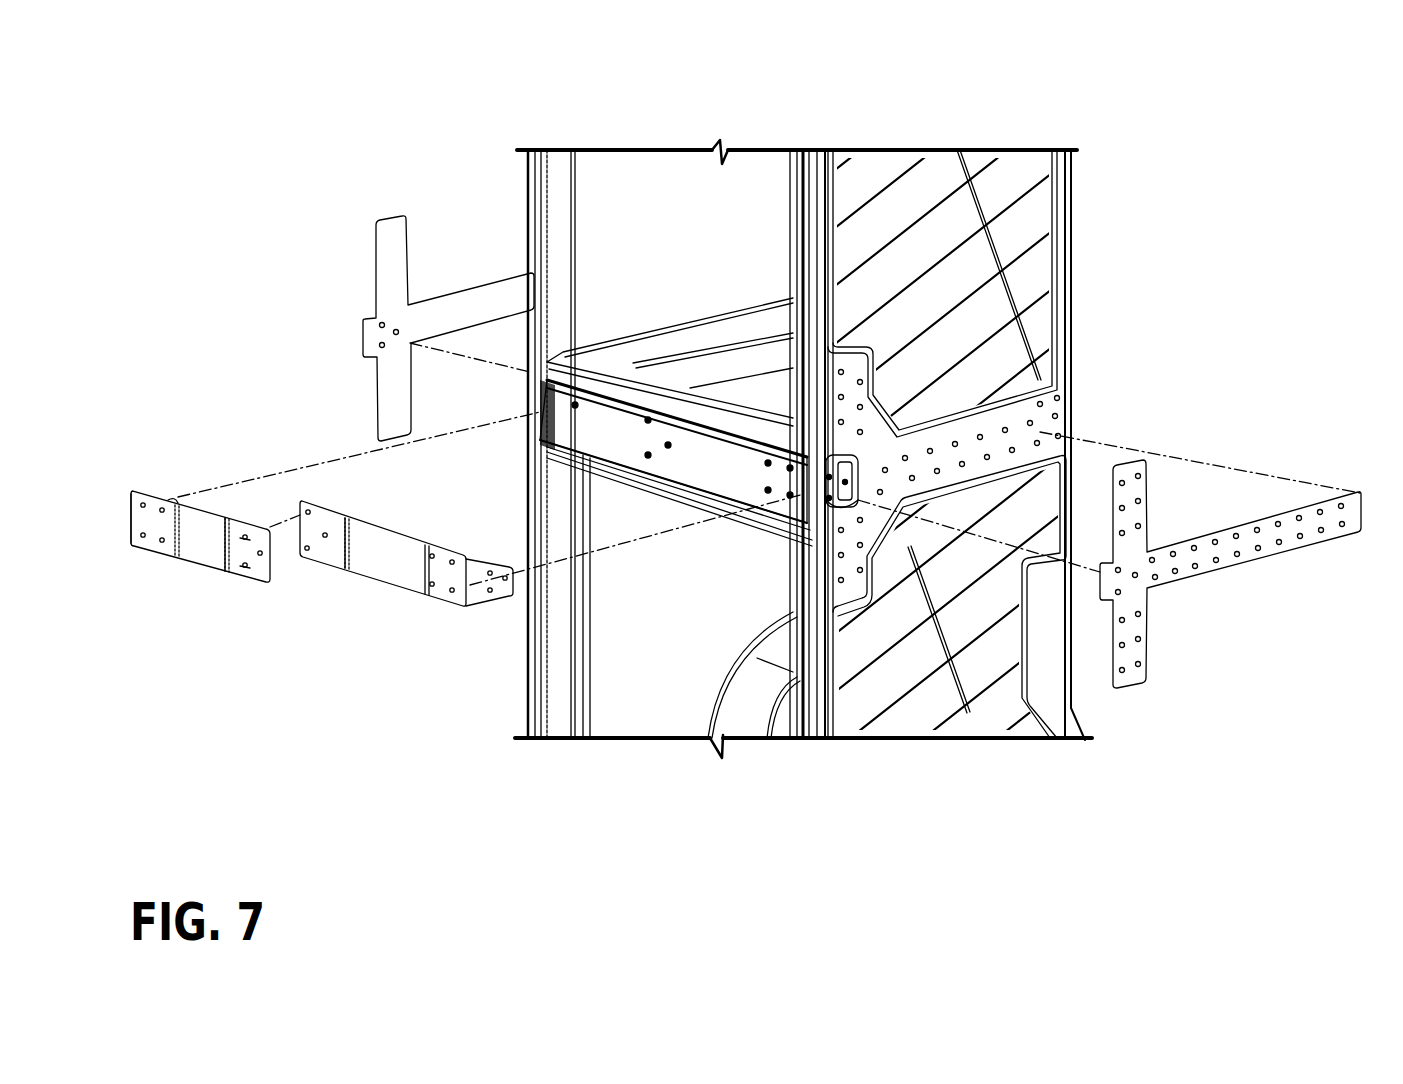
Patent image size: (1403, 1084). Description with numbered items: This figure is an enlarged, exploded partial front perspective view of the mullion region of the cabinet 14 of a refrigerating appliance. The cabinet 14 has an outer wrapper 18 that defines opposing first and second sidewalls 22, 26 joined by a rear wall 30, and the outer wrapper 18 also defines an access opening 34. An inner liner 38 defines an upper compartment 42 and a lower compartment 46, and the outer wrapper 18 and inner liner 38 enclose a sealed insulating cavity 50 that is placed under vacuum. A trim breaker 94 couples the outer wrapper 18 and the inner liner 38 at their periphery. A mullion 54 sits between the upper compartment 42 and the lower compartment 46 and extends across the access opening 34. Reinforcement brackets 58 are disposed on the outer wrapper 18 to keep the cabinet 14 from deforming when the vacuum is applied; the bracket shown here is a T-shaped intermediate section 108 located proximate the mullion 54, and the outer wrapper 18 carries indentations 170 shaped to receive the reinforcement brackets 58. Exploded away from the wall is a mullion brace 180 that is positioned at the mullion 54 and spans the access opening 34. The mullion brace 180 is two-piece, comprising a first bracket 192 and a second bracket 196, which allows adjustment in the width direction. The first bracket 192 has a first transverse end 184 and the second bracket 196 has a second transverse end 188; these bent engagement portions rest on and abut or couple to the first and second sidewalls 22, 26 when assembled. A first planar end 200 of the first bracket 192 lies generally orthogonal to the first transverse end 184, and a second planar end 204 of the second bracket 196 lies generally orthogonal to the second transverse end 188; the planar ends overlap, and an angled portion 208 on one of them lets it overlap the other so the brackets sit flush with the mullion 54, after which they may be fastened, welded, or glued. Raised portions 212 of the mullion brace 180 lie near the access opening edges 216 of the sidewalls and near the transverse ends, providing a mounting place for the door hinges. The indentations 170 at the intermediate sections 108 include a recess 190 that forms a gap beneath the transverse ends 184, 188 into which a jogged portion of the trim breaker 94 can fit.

The cabinet 14 is at (1135, 131).
The outer wrapper 18 is at (1007, 178).
The first sidewall 22 is at (527, 190).
The second sidewall 26 is at (1030, 232).
The rear wall 30 is at (1072, 292).
The access opening 34 is at (612, 590).
The inner liner 38 is at (603, 208).
The upper compartment 42 is at (680, 236).
The lower compartment 46 is at (687, 621).
The insulating cavity 50 is at (803, 703).
The mullion 54 is at (600, 422).
The reinforcement bracket 58 is at (428, 298).
The trim breaker 94 is at (795, 678).
The intermediate section 108 is at (385, 298).
The indentation 170 is at (1045, 432).
The mullion brace 180 is at (293, 547).
The first transverse end 184 is at (170, 498).
The second transverse end 188 is at (483, 580).
The recess 190 is at (843, 495).
The first bracket 192 is at (205, 543).
The second bracket 196 is at (372, 565).
The first planar end 200 is at (252, 528).
The second planar end 204 is at (323, 523).
The angled portion 208 is at (229, 512).
The raised portion 212 is at (124, 515).
The access opening edge 216 is at (797, 152).